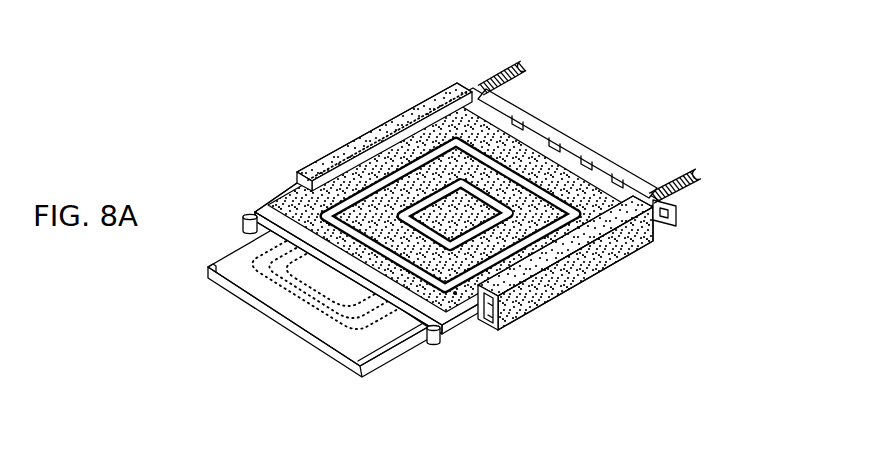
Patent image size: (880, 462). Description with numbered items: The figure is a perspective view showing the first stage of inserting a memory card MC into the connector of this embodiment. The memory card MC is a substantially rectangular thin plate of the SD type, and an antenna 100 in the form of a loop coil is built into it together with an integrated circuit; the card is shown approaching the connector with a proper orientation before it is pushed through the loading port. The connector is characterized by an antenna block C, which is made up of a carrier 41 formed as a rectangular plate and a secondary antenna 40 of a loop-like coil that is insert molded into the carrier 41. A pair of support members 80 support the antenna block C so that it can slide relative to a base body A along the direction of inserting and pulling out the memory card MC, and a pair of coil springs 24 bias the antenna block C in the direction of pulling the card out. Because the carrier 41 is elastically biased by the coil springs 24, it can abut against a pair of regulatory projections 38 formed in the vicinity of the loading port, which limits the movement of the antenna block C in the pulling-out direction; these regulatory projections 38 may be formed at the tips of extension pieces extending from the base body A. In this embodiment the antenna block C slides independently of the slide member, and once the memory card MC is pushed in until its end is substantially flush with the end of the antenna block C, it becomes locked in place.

The coil spring 24 is at (498, 72).
The antenna block C is at (523, 104).
The base body A is at (588, 141).
The support member 80 is at (365, 132).
The carrier 41 is at (273, 199).
The regulatory projection 38 is at (243, 222).
The secondary antenna 40 is at (455, 293).
The antenna 100 is at (294, 297).
The memory card MC is at (305, 338).